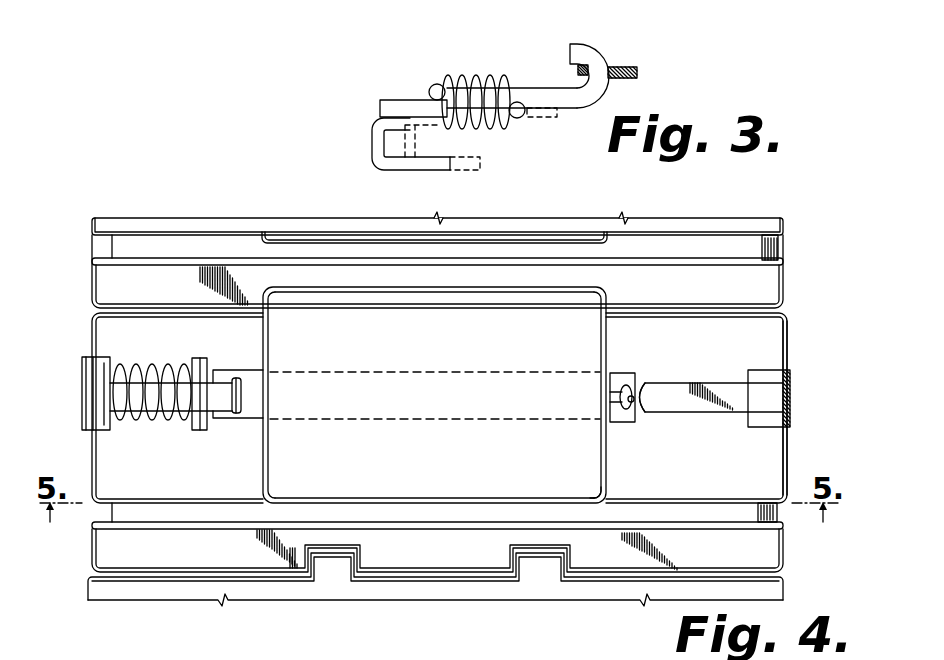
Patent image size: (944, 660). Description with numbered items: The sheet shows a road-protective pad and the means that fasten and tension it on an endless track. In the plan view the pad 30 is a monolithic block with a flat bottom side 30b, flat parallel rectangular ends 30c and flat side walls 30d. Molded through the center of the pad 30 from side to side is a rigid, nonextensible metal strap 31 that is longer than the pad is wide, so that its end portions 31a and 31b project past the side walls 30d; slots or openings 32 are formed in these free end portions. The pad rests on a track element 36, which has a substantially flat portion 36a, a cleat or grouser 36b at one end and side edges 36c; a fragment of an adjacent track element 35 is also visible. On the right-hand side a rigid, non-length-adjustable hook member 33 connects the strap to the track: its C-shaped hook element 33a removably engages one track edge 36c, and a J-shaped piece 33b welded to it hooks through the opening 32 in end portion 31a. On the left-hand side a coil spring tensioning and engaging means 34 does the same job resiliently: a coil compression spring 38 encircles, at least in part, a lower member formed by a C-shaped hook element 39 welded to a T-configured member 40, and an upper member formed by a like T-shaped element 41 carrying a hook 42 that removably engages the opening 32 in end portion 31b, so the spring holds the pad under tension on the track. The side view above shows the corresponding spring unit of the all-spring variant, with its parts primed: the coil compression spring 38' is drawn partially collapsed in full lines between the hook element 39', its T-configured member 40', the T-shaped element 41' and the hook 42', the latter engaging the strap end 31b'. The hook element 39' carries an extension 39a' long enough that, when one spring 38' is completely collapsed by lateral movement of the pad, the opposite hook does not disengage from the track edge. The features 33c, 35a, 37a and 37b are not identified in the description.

In FIG. 4, the pad 30 is at (258, 507).
In FIG. 4, the bottom side 30b is at (602, 478).
In FIG. 4, the end 30c is at (385, 287).
In FIG. 4, the side surface 30d is at (262, 331).
In FIG. 4, the strap 31 is at (400, 354).
In FIG. 4, the end portion of strap 31a is at (620, 373).
In FIG. 4, the end portion of strap 31b is at (232, 377).
In FIG. 4, the opening 32 is at (623, 420).
In FIG. 4, the hook member 33 is at (716, 360).
In FIG. 4, the C-shaped hook element 33a is at (790, 377).
In FIG. 4, the J-shaped element 33b is at (697, 407).
In FIG. 4, the latch rod end 33c is at (618, 400).
In FIG. 4, the coil spring tensioning and engaging means 34 is at (175, 340).
In FIG. 4, the track element 35 is at (80, 590).
In FIG. 4, the base plate bottom edge 35a is at (202, 588).
In FIG. 4, the track element 36 is at (88, 316).
In FIG. 4, the flat portion 36a is at (250, 478).
In FIG. 4, the cleat 36b is at (158, 517).
In FIG. 4, the side edge 36c is at (86, 342).
In FIG. 4, the top flange 37a is at (177, 200).
In FIG. 4, the top flange tab 37b is at (310, 246).
In FIG. 4, the coil compression spring 38 is at (198, 412).
In FIG. 4, the C-shaped hook element 39 is at (77, 406).
In FIG. 4, the T-configured member 40 is at (73, 393).
In FIG. 4, the T-shaped element 41 is at (152, 406).
In FIG. 4, the hook 42 is at (264, 395).
In FIG. 3, the coil compression spring 38' is at (477, 83).
In FIG. 3, the hook element 39' is at (384, 144).
In FIG. 3, the extension 39a' is at (466, 176).
In FIG. 3, the T-configured member 40' is at (413, 92).
In FIG. 3, the T-shaped element 41' is at (512, 82).
In FIG. 3, the hook 42' is at (587, 58).
In FIG. 3, the end portion of strap 31b' is at (639, 57).